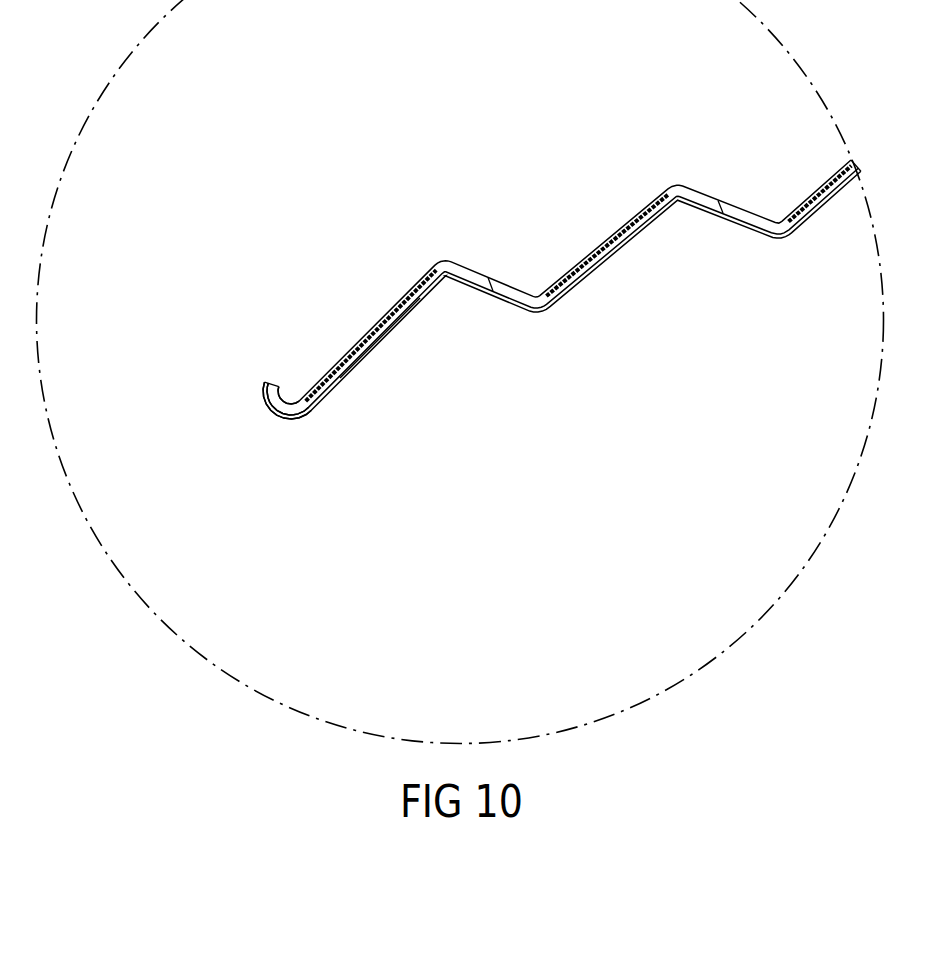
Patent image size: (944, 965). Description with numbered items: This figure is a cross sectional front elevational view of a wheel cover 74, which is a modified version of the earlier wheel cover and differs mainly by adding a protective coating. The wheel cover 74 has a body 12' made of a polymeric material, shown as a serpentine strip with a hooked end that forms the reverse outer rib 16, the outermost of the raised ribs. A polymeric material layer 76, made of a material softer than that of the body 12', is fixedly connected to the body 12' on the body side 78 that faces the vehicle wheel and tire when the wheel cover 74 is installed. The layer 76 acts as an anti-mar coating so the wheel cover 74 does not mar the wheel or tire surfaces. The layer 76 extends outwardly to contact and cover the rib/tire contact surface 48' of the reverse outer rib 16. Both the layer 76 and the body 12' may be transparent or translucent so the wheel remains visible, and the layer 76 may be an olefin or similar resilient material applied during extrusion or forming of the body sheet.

The wheel cover 74 is at (545, 256).
The body 12' is at (564, 282).
The body side 78 is at (350, 386).
The polymeric material layer 76 is at (378, 345).
The reverse outer rib 16 is at (289, 401).
The rib/tire contact surface 48' is at (262, 433).